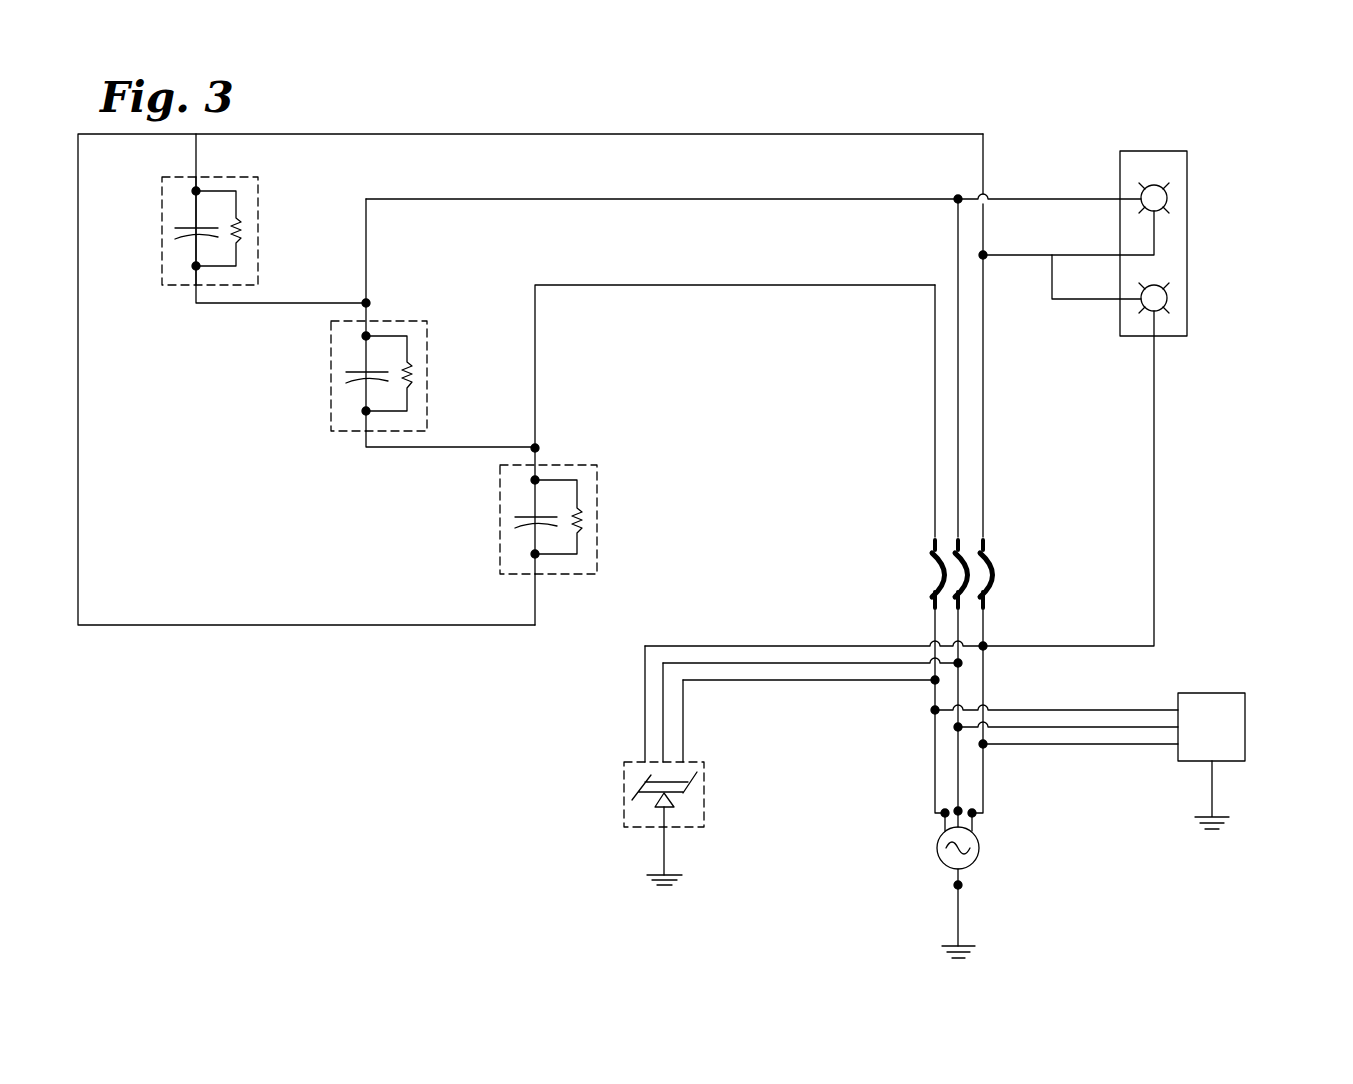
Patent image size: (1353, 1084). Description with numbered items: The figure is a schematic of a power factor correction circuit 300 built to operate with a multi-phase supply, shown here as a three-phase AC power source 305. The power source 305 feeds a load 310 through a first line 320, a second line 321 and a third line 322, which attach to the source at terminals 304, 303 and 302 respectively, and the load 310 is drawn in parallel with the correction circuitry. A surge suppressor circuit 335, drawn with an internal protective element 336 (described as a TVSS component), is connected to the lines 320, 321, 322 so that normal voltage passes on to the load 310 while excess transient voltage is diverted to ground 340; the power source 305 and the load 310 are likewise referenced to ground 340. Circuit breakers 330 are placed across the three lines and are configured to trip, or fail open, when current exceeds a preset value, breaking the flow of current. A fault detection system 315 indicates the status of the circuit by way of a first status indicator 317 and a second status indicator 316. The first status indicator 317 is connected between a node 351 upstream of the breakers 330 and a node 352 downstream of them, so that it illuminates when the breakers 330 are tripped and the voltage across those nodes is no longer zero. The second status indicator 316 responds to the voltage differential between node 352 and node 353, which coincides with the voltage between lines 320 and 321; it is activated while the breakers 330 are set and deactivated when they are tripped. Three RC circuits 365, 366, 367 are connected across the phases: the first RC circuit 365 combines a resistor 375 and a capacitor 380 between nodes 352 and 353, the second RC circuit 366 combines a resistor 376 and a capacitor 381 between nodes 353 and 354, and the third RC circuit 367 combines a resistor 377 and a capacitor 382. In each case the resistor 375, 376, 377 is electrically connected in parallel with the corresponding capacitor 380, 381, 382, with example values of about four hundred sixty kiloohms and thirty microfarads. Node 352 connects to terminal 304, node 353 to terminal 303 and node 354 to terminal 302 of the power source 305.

The power factor correction circuit 300 is at (1256, 124).
The terminal 302 is at (944, 818).
The terminal 303 is at (958, 810).
The terminal 304 is at (972, 813).
The AC power source 305 is at (958, 870).
The load 310 is at (1245, 703).
The fault detection system 315 is at (1170, 217).
The second status indicator 316 is at (1157, 185).
The first status indicator 317 is at (1167, 298).
The first line 320 is at (983, 456).
The second line 321 is at (958, 430).
The third line 322 is at (935, 475).
The circuit breakers 330 is at (985, 574).
The surge suppressor circuit 335 is at (644, 813).
The surge element 336 is at (692, 787).
The ground 340 is at (665, 876).
The node 351 is at (983, 646).
The node 352 is at (983, 255).
The node 353 is at (958, 199).
The node 354 is at (535, 448).
The first RC circuit 365 is at (170, 285).
The second RC circuit 366 is at (340, 431).
The third RC circuit 367 is at (508, 574).
The resistor 375 is at (240, 219).
The resistor 376 is at (411, 365).
The resistor 377 is at (581, 511).
The capacitor 380 is at (162, 236).
The capacitor 381 is at (331, 380).
The capacitor 382 is at (500, 524).